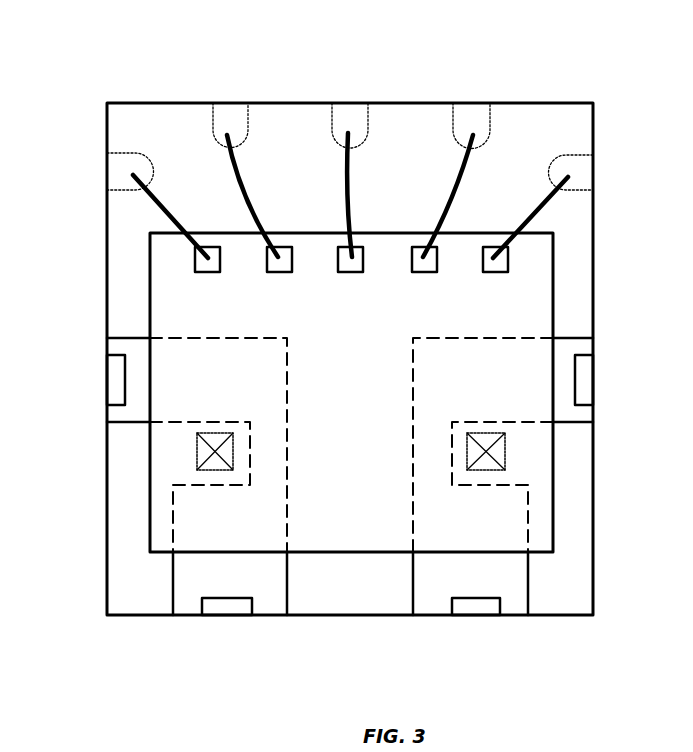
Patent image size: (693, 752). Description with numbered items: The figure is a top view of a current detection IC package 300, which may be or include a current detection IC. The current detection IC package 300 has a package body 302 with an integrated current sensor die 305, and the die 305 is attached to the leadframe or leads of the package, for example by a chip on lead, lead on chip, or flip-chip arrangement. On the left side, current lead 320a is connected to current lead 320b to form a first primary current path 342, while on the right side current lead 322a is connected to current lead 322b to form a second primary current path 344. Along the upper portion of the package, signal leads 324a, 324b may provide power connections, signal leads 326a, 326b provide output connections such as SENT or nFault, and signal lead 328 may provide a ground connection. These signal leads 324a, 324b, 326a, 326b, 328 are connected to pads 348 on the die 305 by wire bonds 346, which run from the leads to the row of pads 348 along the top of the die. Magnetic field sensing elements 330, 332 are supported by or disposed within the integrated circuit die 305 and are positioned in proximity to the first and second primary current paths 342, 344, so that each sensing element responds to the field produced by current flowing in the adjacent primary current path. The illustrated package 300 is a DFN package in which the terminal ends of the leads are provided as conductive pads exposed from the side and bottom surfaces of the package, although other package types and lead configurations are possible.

The current detection IC package 300 is at (146, 42).
The package body 302 is at (540, 120).
The integrated current sensor die 305 is at (150, 267).
The current lead 320a is at (107, 350).
The current lead 320b is at (182, 615).
The current lead 322a is at (593, 350).
The current lead 322b is at (518, 615).
The signal lead 324a is at (115, 167).
The signal lead 324b is at (590, 166).
The signal lead 326a is at (230, 113).
The signal lead 326b is at (474, 113).
The signal lead 328 is at (351, 113).
The magnetic field sensing element 330 is at (197, 452).
The magnetic field sensing element 332 is at (505, 450).
The first primary current path 342 is at (182, 397).
The second primary current path 344 is at (520, 397).
The wire bonds 346 is at (347, 190).
The pads 348 is at (277, 272).